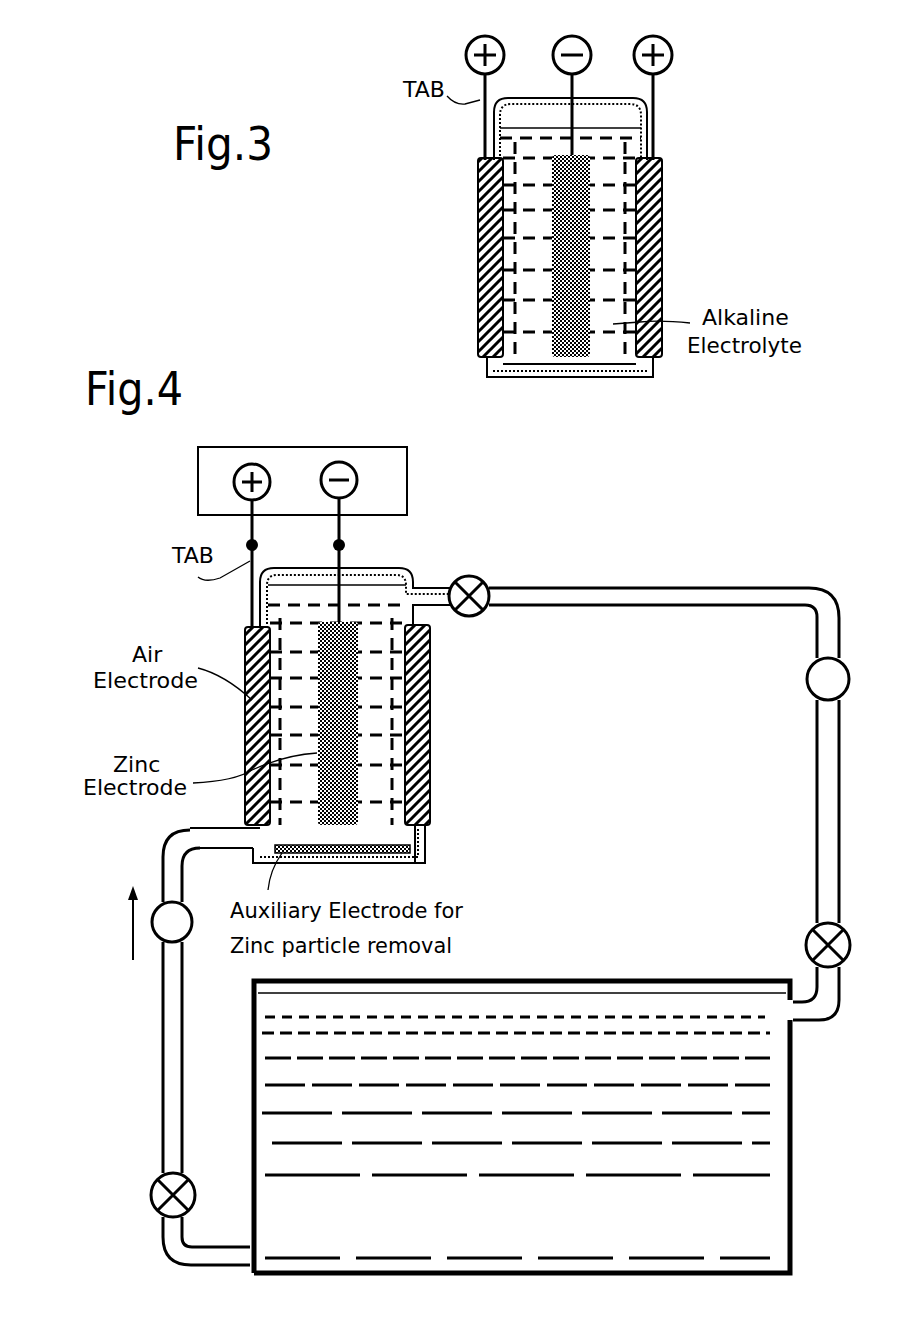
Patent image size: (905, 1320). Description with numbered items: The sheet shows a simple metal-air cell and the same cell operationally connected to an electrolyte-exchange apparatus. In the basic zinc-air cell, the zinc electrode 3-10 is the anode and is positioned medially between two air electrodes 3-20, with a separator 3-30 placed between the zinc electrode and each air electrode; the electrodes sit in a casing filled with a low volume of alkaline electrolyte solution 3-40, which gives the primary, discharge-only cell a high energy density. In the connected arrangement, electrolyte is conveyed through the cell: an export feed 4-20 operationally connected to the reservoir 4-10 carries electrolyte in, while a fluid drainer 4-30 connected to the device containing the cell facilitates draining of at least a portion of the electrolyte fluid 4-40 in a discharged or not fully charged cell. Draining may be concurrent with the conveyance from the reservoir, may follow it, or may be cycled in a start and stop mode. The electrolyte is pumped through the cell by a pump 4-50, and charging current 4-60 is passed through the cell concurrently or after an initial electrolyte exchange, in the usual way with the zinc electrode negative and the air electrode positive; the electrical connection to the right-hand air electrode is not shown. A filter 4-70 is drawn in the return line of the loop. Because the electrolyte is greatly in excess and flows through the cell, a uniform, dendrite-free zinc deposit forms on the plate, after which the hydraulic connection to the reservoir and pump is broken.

In FIG. 3, the zinc electrode 3-10 is at (552, 286).
In FIG. 3, the air electrodes 3-20 is at (480, 236).
In FIG. 3, the separator 3-30 is at (627, 262).
In FIG. 3, the electrolyte solution 3-40 is at (524, 356).
In FIG. 4, the reservoir 4-10 is at (725, 1233).
In FIG. 4, the export feed 4-20 is at (165, 877).
In FIG. 4, the fluid drainer 4-30 is at (512, 545).
In FIG. 4, the electrolyte fluid 4-40 is at (403, 723).
In FIG. 4, the pump 4-50 is at (160, 932).
In FIG. 4, the charging current 4-60 is at (198, 468).
In FIG. 4, the Filter 4-70 is at (810, 687).